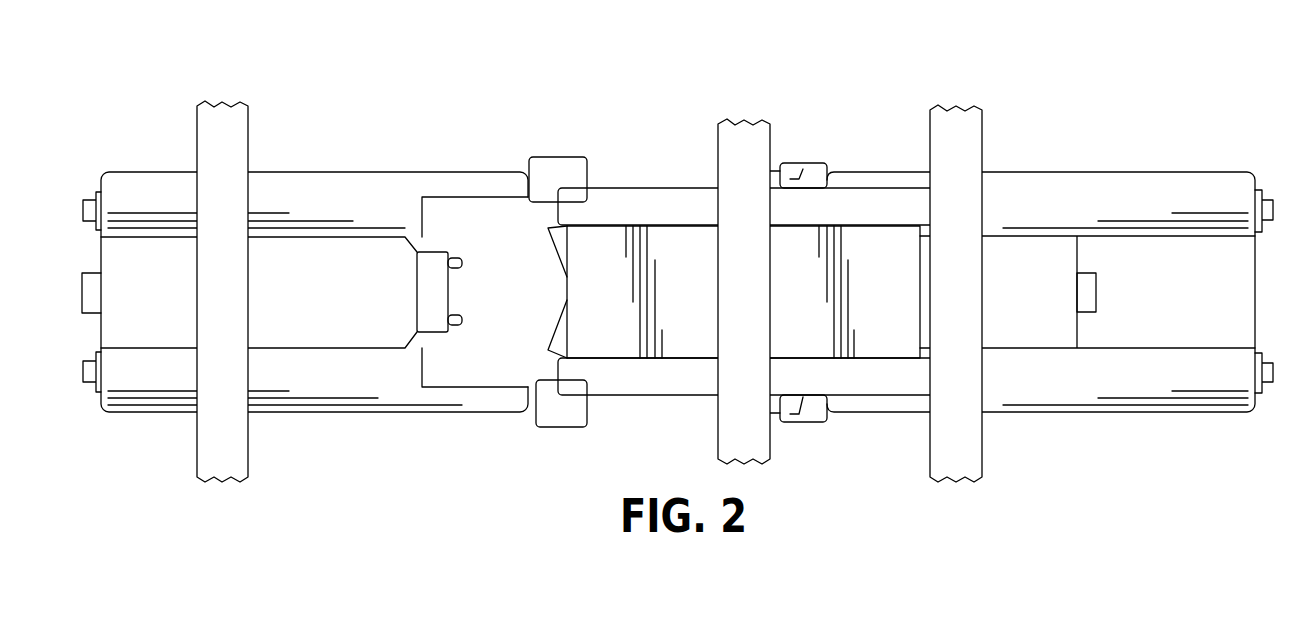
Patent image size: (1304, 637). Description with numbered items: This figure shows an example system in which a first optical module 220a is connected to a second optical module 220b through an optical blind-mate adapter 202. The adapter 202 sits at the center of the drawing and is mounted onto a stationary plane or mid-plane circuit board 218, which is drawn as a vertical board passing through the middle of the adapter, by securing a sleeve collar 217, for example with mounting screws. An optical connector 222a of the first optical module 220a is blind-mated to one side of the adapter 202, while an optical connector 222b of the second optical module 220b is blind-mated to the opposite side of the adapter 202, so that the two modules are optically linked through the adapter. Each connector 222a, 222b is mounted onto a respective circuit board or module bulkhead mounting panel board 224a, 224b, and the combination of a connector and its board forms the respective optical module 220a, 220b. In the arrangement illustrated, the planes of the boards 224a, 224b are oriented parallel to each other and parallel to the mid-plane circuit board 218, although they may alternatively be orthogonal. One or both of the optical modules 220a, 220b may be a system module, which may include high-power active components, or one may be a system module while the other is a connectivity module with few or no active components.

The optical blind-mate adapter 202 is at (668, 143).
The sleeve collar 217 is at (791, 179).
The mid-plane circuit board 218 is at (770, 125).
The first optical module 220a is at (334, 269).
The second optical module 220b is at (1021, 269).
The optical connector 222a is at (381, 414).
The optical connector 222b is at (1081, 414).
The mounting panel board 224a is at (248, 125).
The mounting panel board 224b is at (982, 130).